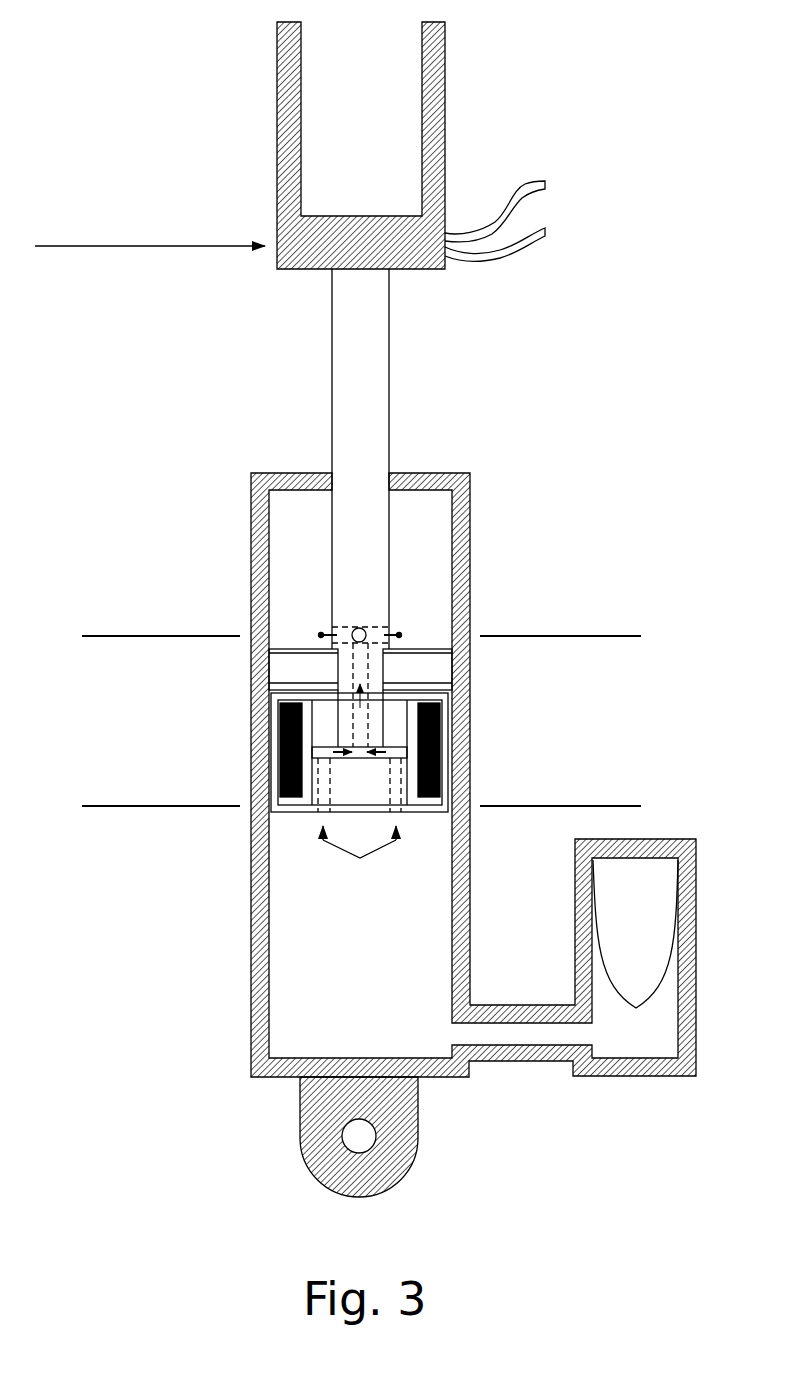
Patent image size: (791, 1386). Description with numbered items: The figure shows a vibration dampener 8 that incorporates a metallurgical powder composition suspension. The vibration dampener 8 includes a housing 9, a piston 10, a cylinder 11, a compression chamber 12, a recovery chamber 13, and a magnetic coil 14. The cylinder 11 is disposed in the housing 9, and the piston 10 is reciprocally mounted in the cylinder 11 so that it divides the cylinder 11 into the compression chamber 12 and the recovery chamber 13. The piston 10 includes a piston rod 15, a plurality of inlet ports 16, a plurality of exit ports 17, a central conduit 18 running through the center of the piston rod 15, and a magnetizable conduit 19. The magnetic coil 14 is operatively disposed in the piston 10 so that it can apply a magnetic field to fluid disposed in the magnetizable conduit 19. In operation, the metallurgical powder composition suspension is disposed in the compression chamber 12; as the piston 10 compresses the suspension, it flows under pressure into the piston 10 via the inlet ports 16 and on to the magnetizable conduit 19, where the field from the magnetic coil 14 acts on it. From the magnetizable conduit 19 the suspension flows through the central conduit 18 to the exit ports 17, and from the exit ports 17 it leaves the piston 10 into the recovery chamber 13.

The vibration dampener 8 is at (577, 462).
The housing 9 is at (459, 539).
The piston 10 is at (380, 778).
The cylinder 11 is at (412, 510).
The compression chamber 12 is at (326, 990).
The recovery chamber 13 is at (286, 543).
The magnetic coil 14 is at (448, 757).
The piston rod 15 is at (360, 359).
The inlet ports 16 is at (360, 858).
The exit ports 17 is at (321, 635).
The central conduit 18 is at (360, 672).
The magnetizable conduit 19 is at (357, 760).